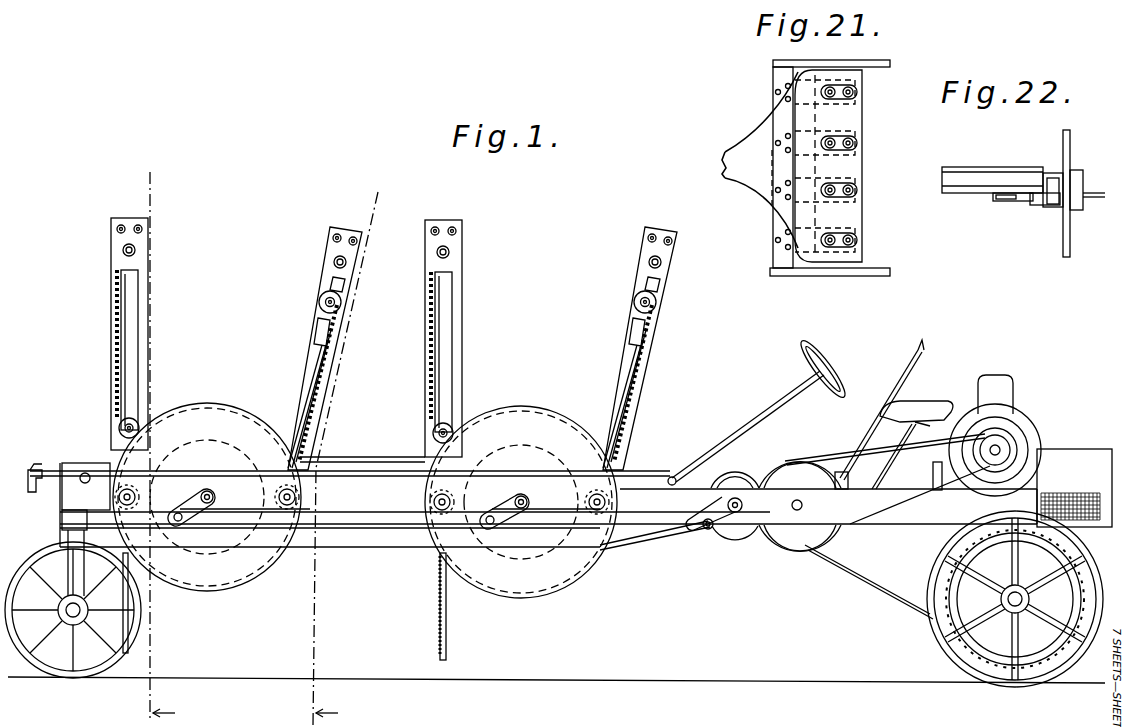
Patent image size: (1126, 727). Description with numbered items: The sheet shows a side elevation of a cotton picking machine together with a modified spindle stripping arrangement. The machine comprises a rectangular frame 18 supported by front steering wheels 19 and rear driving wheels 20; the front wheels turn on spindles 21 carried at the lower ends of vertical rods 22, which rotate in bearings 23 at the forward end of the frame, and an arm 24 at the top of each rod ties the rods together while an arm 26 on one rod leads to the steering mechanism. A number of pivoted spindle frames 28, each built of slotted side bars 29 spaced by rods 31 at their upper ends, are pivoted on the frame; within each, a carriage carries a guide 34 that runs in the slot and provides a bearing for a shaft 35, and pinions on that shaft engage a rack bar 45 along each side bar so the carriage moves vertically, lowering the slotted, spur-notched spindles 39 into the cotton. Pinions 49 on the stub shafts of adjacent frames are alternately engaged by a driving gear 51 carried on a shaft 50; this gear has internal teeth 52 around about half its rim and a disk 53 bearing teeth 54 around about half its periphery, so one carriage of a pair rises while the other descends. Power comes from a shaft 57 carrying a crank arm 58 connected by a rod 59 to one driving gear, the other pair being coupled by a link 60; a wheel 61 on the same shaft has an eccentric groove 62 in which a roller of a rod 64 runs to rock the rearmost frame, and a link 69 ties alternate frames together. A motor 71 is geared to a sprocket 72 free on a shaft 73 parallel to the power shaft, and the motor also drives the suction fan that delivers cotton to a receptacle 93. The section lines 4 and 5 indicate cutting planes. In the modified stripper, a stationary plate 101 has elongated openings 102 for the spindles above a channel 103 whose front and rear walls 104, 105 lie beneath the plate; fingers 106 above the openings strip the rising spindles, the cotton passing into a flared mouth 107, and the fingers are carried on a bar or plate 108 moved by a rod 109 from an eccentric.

In FIG. 1, the section line 4 is at (151, 438).
In FIG. 1, the section line 5 is at (351, 453).
In FIG. 1, the frame 18 is at (548, 505).
In FIG. 1, the front steering wheels 19 is at (58, 546).
In FIG. 1, the rear driving wheels 20 is at (930, 578).
In FIG. 1, the spindles 21 is at (60, 614).
In FIG. 1, the vertical rods 22 is at (72, 562).
In FIG. 1, the bearings 23 is at (74, 520).
In FIG. 1, the arm 24 is at (34, 466).
In FIG. 1, the arm 26 is at (85, 472).
In FIG. 1, the pivoted spindle frames 28 is at (393, 344).
In FIG. 1, the slotted side bars 29 is at (140, 300).
In FIG. 1, the rods 31 is at (133, 226).
In FIG. 1, the guide 34 is at (320, 328).
In FIG. 1, the shaft 35 is at (140, 422).
In FIG. 1, the spindles 39 is at (318, 400).
In FIG. 1, the rack bar 45 is at (115, 340).
In FIG. 1, the pinions 49 is at (137, 490).
In FIG. 1, the shaft 50 is at (209, 491).
In FIG. 1, the driving gear 51 is at (232, 392).
In FIG. 1, the internal teeth 52 is at (248, 585).
In FIG. 1, the disk 53 is at (200, 555).
In FIG. 1, the teeth 54 is at (240, 432).
In FIG. 1, the shaft 57 is at (736, 513).
In FIG. 1, the crank arm 58 is at (705, 530).
In FIG. 1, the rod 59 is at (522, 522).
In FIG. 1, the link 60 is at (350, 516).
In FIG. 1, the wheel 61 is at (741, 476).
In FIG. 1, the eccentric groove 62 is at (720, 468).
In FIG. 1, the rod 64 is at (640, 542).
In FIG. 1, the link 69 is at (360, 548).
In FIG. 1, the motor 71 is at (1010, 396).
In FIG. 1, the sprocket 72 is at (805, 463).
In FIG. 1, the shaft 73 is at (803, 505).
In FIG. 1, the receptacle 93 is at (1074, 488).
In FIG. 21, the stationary plate 101 is at (850, 117).
In FIG. 21, the elongated openings 102 is at (858, 88).
In FIG. 22, the elongated openings 102 is at (1068, 150).
In FIG. 22, the channel 103 is at (1056, 184).
In FIG. 21, the front wall 104 is at (855, 209).
In FIG. 22, the front wall 104 is at (1086, 204).
In FIG. 22, the rear wall 105 is at (1042, 176).
In FIG. 21, the fingers 106 is at (800, 82).
In FIG. 22, the fingers 106 is at (1030, 208).
In FIG. 21, the flared mouth 107 is at (755, 152).
In FIG. 22, the flared mouth 107 is at (962, 185).
In FIG. 21, the bar or plate 108 is at (775, 72).
In FIG. 22, the bar or plate 108 is at (998, 203).
In FIG. 21, the rod 109 is at (893, 62).